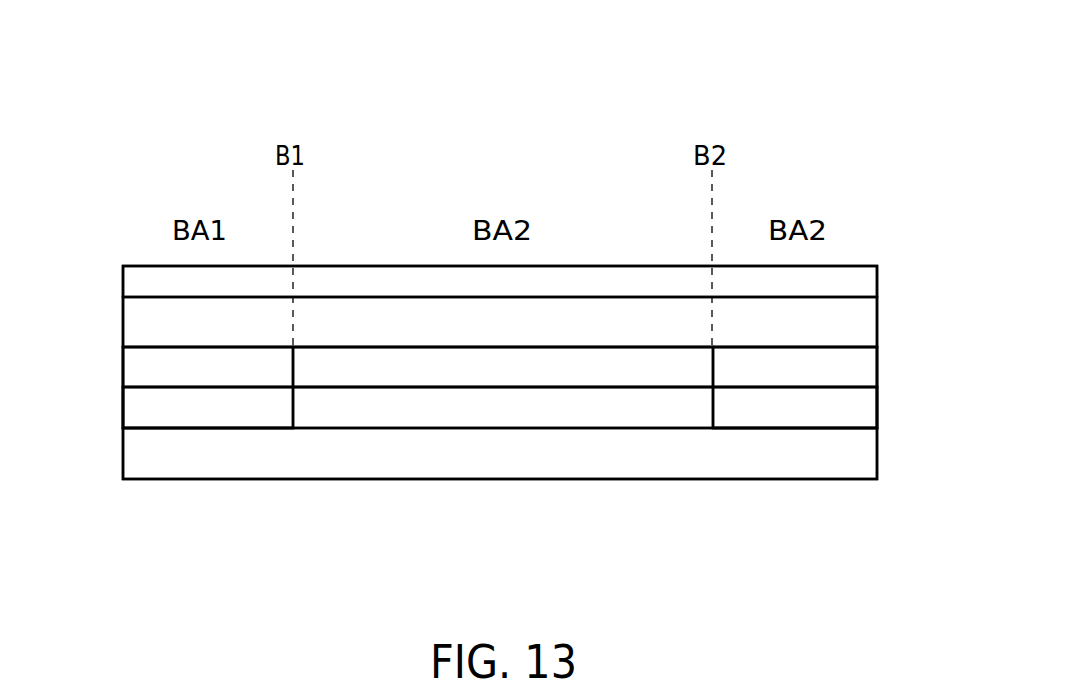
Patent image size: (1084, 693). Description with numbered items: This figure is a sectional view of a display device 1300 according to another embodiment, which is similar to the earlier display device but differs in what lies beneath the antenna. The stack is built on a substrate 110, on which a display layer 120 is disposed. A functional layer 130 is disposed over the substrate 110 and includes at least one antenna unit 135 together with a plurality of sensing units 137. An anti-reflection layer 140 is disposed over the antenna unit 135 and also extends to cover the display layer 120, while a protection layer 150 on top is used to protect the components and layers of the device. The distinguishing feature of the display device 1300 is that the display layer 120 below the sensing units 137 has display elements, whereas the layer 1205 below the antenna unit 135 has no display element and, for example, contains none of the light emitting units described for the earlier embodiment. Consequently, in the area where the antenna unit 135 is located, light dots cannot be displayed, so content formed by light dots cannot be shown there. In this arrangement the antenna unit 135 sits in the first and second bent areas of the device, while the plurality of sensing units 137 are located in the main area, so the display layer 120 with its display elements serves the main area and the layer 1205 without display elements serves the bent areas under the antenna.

The display device 1300 is at (789, 98).
The substrate 110 is at (503, 457).
The display layer 120 is at (573, 413).
The layer 1205 is at (147, 410).
The functional layer 130 is at (887, 348).
The antenna unit 135 is at (217, 365).
The sensing unit 137 is at (353, 368).
The anti-reflection layer 140 is at (887, 296).
The protection layer 150 is at (620, 280).